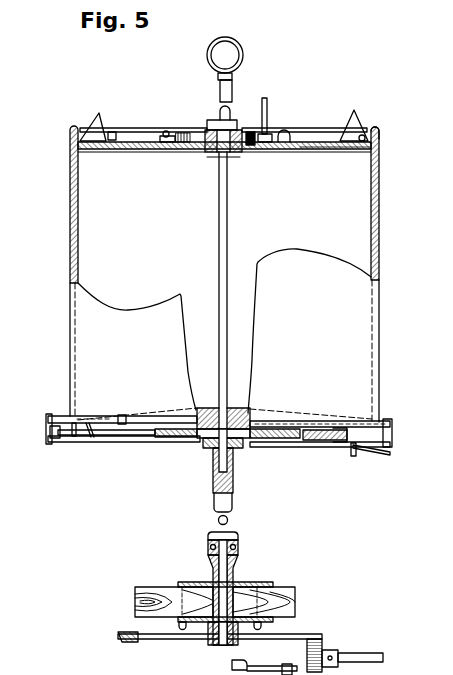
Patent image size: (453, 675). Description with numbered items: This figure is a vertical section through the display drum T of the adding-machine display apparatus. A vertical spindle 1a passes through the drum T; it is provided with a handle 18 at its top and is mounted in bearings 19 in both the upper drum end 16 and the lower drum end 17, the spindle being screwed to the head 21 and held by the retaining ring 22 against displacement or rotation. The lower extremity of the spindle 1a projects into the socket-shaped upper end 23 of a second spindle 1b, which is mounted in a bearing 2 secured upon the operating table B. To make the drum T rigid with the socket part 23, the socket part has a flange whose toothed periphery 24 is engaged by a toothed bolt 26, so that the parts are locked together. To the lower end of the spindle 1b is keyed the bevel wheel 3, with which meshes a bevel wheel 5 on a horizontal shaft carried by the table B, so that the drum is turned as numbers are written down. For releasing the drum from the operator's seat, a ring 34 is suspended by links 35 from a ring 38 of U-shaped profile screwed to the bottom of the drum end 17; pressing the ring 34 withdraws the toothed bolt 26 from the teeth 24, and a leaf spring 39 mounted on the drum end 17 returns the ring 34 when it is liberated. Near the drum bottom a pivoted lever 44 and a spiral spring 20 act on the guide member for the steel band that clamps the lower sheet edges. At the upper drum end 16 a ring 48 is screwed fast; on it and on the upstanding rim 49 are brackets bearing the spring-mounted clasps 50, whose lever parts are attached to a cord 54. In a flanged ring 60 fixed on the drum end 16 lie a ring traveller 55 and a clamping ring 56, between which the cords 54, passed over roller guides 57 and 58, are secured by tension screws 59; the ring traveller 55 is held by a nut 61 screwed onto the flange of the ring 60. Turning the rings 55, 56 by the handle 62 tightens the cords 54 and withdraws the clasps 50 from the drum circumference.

The display drum T is at (224, 274).
The operating table B is at (310, 600).
The vertical spindle 1a is at (230, 240).
The spindle 1b is at (230, 521).
The bearing 2 is at (235, 580).
The bevel wheel 3 is at (323, 648).
The bevel wheel 5 is at (352, 651).
The upper drum end 16 is at (292, 151).
The lower drum end 17 is at (243, 410).
The handle 18 is at (243, 56).
The bearings 19 is at (244, 150).
The spiral spring 20 is at (232, 666).
The head 21 is at (240, 449).
The retaining ring 22 is at (217, 127).
The socket-shaped upper end 23 is at (203, 448).
The toothed periphery 24 is at (160, 440).
The toothed bolt 26 is at (291, 440).
The ring 34 is at (391, 452).
The links 35 is at (47, 434).
The ring 38 is at (392, 428).
The leaf spring 39 is at (115, 441).
The pivoted lever 44 is at (133, 409).
The ring 48 is at (353, 151).
The upstanding rim 49 is at (383, 133).
The spring mounted clasps 50 is at (349, 127).
The cord 54 is at (345, 133).
The ring traveller 55 is at (205, 151).
The clamping ring 56 is at (283, 133).
The roller guide 57 is at (134, 132).
The roller guide 58 is at (162, 128).
The tension screws 59 is at (183, 130).
The flanged ring 60 is at (241, 128).
The nut 61 is at (251, 131).
The handle 62 is at (269, 126).